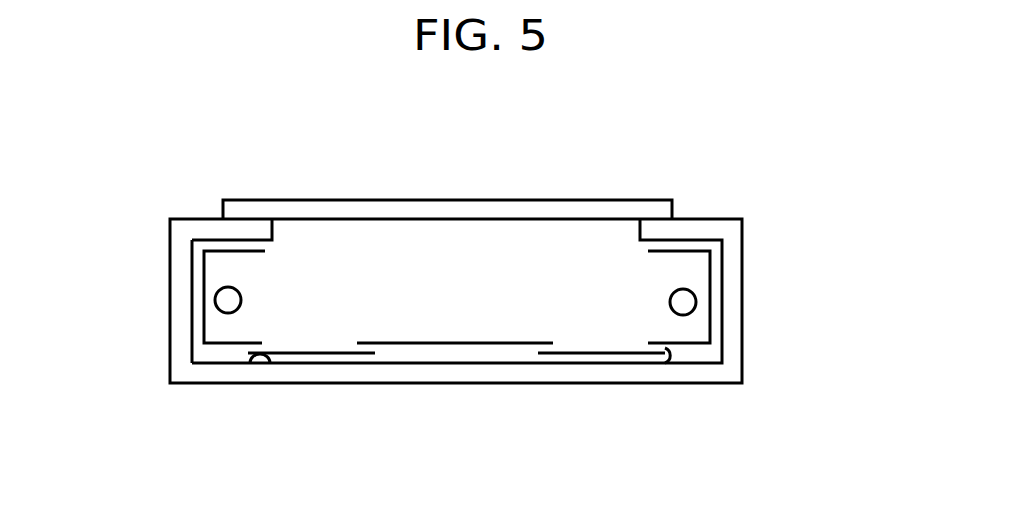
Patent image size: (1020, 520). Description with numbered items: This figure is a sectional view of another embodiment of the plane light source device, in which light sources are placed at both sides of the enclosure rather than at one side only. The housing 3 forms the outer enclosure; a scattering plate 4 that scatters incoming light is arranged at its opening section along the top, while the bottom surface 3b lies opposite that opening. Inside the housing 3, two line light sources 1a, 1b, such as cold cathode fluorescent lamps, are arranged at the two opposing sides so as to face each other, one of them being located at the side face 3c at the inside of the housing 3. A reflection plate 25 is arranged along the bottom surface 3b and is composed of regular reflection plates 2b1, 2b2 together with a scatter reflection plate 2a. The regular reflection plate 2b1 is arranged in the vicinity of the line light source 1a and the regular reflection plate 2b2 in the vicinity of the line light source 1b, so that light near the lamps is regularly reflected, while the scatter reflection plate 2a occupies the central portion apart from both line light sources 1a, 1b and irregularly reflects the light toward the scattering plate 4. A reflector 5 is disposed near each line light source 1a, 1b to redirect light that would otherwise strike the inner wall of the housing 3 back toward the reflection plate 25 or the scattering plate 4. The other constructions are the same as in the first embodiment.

The line light source 1a is at (228, 300).
The line light source 1b is at (683, 302).
The scatter reflection plate 2a is at (445, 345).
The regular reflection plate 2b1 is at (318, 353).
The regular reflection plate 2b2 is at (567, 353).
The housing 3 is at (698, 232).
The bottom surface 3b is at (250, 355).
The side face 3c is at (192, 262).
The scattering plate 4 is at (447, 210).
The reflector 5 is at (712, 327).
The reflection plate 25 is at (670, 353).